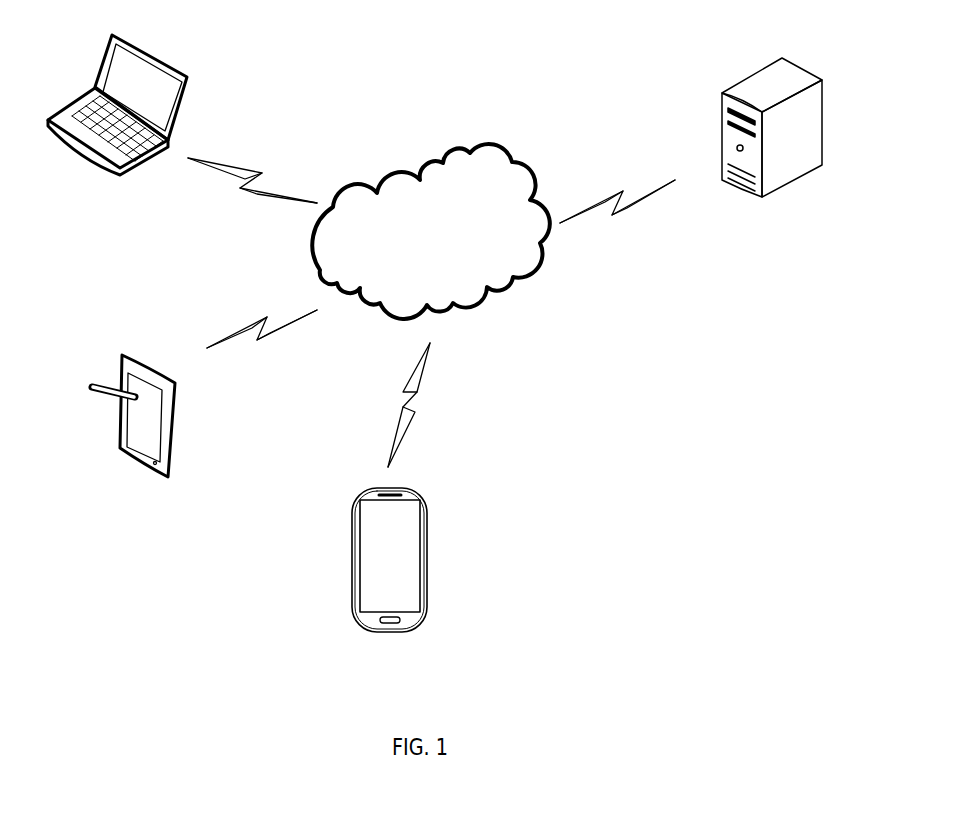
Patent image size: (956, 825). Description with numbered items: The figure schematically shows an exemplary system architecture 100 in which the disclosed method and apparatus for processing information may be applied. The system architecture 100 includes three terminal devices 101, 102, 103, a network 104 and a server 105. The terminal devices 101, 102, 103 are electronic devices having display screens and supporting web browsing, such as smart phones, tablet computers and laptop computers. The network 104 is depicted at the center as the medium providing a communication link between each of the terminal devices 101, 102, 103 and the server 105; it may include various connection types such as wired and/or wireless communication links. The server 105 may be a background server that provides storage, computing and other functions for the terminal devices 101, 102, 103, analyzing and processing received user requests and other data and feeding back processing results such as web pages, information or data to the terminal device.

The system architecture 100 is at (465, 41).
The terminal device 101 is at (389, 593).
The terminal device 102 is at (119, 432).
The terminal device 103 is at (117, 116).
The network 104 is at (431, 231).
The server 105 is at (772, 164).